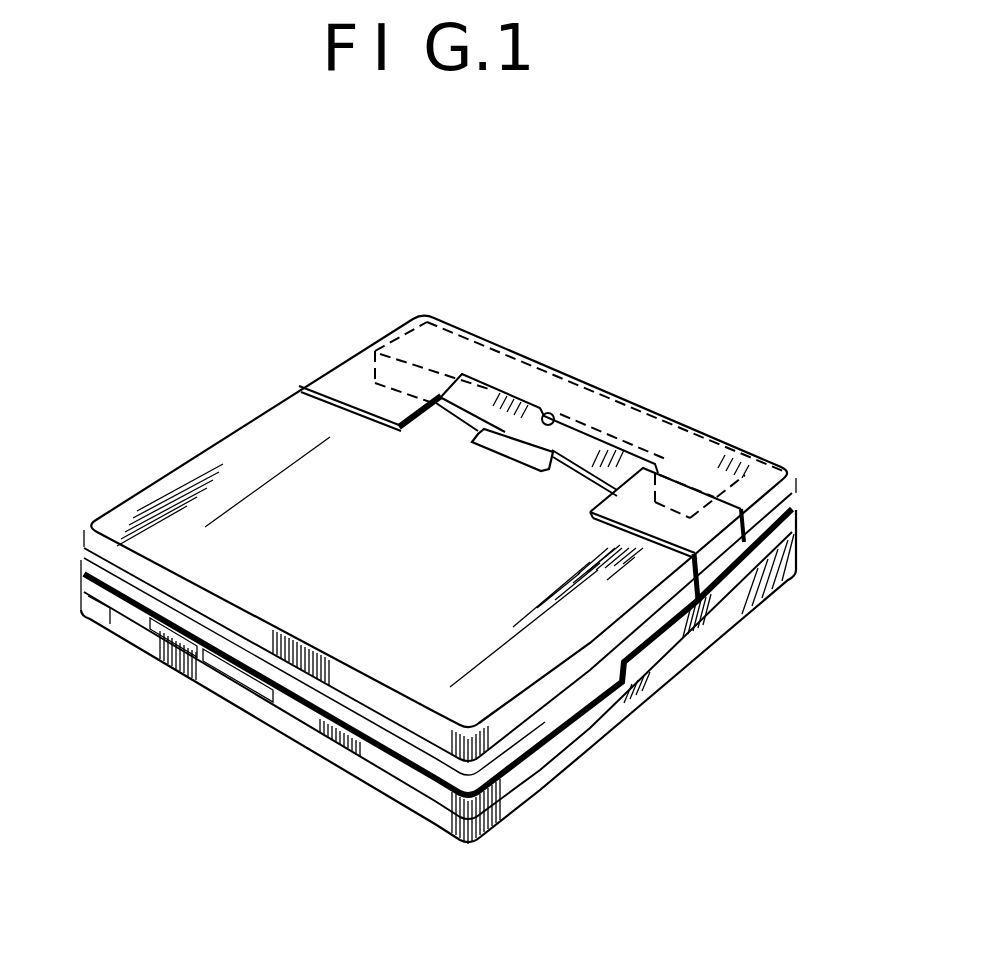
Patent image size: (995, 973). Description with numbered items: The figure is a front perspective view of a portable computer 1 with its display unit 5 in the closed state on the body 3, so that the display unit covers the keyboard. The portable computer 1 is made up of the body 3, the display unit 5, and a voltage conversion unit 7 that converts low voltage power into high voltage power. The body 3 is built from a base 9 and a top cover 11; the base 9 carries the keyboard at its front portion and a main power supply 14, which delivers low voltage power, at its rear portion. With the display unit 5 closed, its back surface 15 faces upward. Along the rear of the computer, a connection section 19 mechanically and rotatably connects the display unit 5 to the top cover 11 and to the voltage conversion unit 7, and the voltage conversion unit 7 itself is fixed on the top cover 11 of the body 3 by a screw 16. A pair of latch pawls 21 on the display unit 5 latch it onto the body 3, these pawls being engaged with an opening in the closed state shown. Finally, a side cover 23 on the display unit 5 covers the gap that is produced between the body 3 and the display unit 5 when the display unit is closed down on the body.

The portable computer 1 is at (298, 378).
The body 3 is at (645, 703).
The display unit 5 is at (180, 462).
The voltage conversion unit 7 is at (480, 407).
The base 9 is at (796, 556).
The top cover 11 is at (798, 523).
The main power supply 14 is at (733, 467).
The back surface 15 is at (258, 437).
The screw 16 is at (547, 405).
The connection section 19 is at (421, 421).
The latch pawls 21 is at (158, 632).
The side cover 23 is at (107, 594).